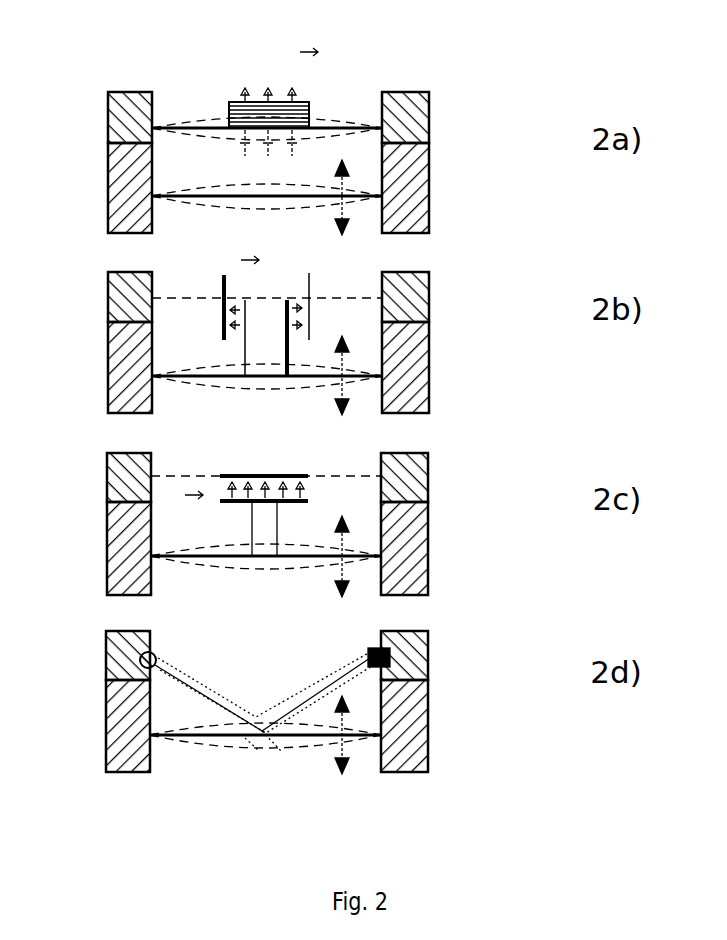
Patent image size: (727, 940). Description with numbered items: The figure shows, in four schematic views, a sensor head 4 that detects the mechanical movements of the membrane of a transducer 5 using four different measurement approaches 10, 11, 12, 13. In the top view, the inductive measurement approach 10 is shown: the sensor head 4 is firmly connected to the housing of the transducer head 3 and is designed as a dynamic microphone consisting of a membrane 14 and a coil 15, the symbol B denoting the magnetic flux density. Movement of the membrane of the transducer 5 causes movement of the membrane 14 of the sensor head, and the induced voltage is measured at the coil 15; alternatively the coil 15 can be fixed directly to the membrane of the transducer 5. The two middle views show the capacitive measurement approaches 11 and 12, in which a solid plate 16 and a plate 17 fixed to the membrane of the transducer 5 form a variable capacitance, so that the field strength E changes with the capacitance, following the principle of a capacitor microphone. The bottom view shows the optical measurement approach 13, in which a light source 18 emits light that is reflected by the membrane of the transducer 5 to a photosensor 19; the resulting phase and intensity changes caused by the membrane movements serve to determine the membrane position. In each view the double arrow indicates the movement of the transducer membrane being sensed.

The transducer head 3 is at (338, 457).
The sensor head 4 is at (318, 379).
The transducer 5 is at (363, 499).
The inductive measurement approach 10 is at (200, 141).
The capacitive measurement approach 11 is at (213, 335).
The capacitive measurement approach 12 is at (214, 530).
The optical measurement approach 13 is at (210, 706).
The membrane 14 is at (342, 128).
The coil 15 is at (233, 102).
The solid plate 16 is at (309, 340).
The plate 17 is at (243, 362).
The light source 18 is at (155, 656).
The photosensor 19 is at (370, 652).